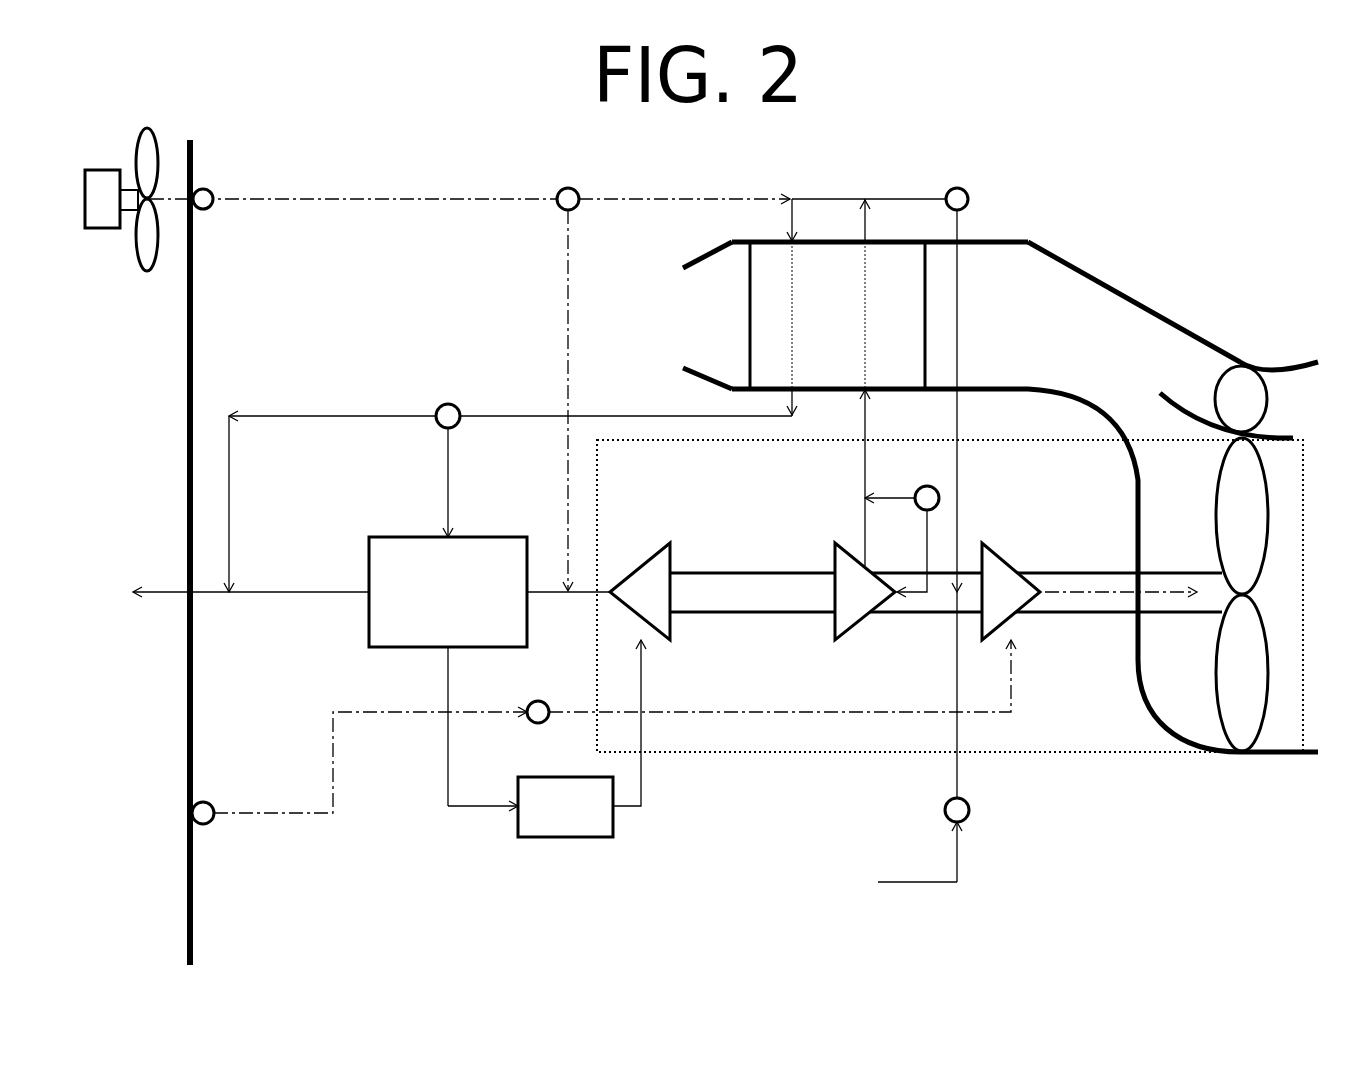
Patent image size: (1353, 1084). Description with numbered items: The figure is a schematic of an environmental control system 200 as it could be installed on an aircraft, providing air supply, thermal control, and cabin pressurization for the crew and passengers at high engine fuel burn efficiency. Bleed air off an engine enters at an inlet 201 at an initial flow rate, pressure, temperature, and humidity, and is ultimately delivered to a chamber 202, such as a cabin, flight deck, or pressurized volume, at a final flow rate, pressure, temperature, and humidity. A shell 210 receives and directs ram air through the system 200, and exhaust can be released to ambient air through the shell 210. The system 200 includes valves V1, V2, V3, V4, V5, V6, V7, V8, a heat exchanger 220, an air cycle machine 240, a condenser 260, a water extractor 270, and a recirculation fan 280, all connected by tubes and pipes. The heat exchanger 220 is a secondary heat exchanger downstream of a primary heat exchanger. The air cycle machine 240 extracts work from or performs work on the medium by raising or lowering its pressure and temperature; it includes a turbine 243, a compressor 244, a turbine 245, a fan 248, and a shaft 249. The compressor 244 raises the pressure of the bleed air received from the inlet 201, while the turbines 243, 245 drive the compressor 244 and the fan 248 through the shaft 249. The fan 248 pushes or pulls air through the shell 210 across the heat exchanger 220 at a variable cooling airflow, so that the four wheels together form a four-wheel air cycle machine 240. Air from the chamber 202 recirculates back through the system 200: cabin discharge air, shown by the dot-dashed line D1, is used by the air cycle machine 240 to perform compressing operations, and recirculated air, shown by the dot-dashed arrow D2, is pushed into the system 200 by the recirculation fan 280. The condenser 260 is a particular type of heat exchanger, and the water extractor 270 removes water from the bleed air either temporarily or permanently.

The system 200 is at (1224, 128).
The inlet 201 is at (889, 885).
The chamber 202 is at (189, 140).
The shell 210 is at (1090, 278).
The heat exchanger 220 is at (817, 328).
The air cycle machine 240 is at (1125, 752).
The turbine 243 is at (629, 604).
The compressor 244 is at (842, 604).
The turbine 245 is at (1022, 604).
The fan 248 is at (1195, 652).
The shaft 249 is at (1078, 613).
The condenser 260 is at (428, 605).
The water extractor 270 is at (546, 820).
The recirculation fan 280 is at (122, 270).
The valve V1 is at (970, 813).
The valve V2 is at (968, 192).
The valve V3 is at (925, 483).
The valve V4 is at (213, 818).
The valve V5 is at (545, 700).
The valve V6 is at (210, 208).
The valve V7 is at (457, 405).
The valve V8 is at (575, 210).
The cabin discharge air D1 is at (335, 712).
The recirculated air D2 is at (397, 199).